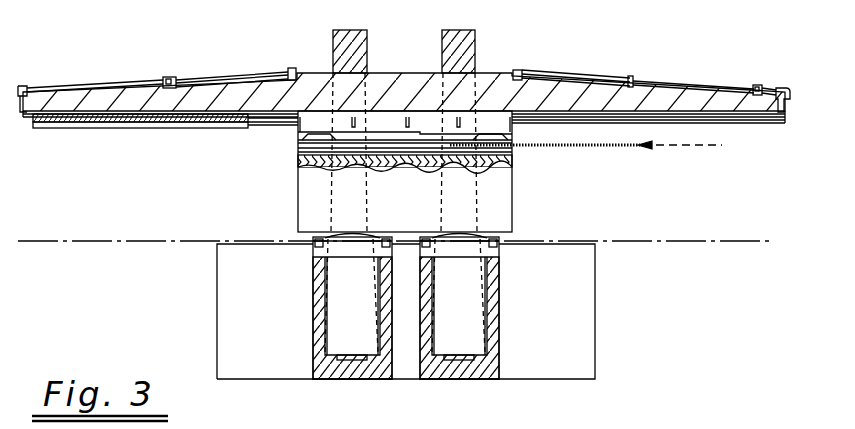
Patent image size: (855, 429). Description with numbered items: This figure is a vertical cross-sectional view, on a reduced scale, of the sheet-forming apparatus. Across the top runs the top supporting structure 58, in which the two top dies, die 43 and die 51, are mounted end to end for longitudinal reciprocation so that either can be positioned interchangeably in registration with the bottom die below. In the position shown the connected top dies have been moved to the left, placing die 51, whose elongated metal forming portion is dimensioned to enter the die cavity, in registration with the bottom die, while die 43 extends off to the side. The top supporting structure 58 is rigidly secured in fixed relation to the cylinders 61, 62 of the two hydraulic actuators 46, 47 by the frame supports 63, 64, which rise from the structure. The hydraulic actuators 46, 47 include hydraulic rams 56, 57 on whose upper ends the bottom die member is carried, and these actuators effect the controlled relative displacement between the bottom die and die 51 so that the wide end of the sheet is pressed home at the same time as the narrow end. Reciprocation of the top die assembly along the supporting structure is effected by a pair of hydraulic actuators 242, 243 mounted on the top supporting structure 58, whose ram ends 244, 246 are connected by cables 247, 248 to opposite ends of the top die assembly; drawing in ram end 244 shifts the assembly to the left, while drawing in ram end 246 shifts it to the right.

The die 43 is at (120, 131).
The hydraulic actuator 46 is at (301, 316).
The hydraulic actuator 47 is at (507, 318).
The die member 51 is at (418, 134).
The hydraulic ram 56 is at (361, 302).
The hydraulic ram 57 is at (468, 302).
The top supporting structure 58 is at (399, 70).
The cylinder 61 is at (318, 283).
The cylinder 62 is at (495, 288).
The frame support 63 is at (333, 32).
The frame support 64 is at (474, 32).
The hydraulic actuator 242 is at (234, 78).
The hydraulic actuator 243 is at (582, 77).
The ram end 244 is at (166, 77).
The ram end 246 is at (757, 87).
The cable 247 is at (89, 85).
The cable 248 is at (769, 88).